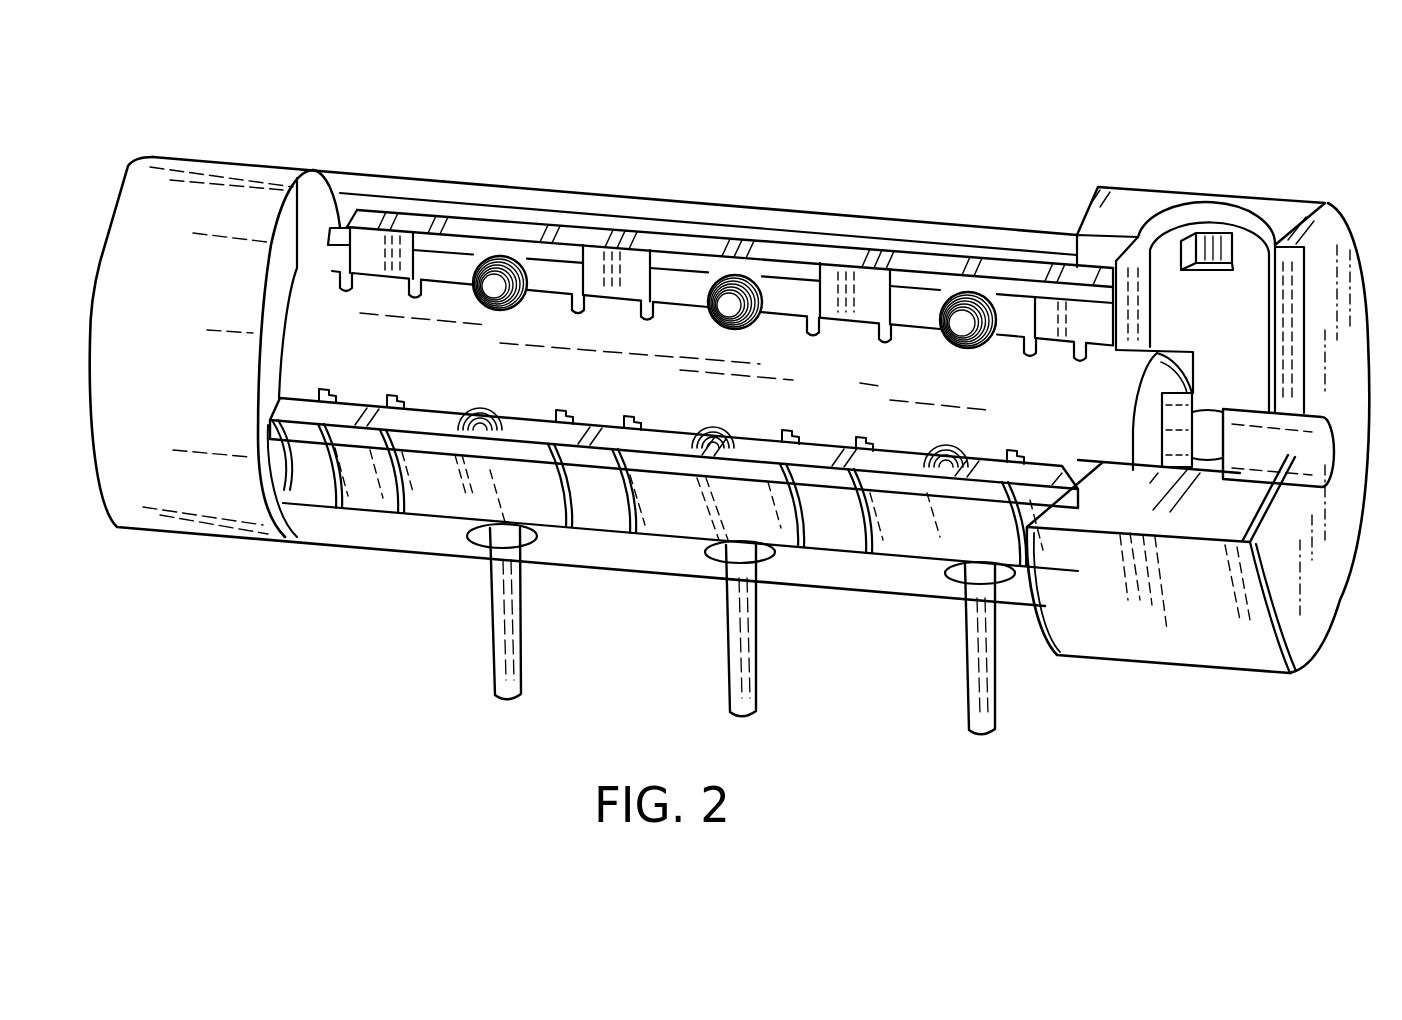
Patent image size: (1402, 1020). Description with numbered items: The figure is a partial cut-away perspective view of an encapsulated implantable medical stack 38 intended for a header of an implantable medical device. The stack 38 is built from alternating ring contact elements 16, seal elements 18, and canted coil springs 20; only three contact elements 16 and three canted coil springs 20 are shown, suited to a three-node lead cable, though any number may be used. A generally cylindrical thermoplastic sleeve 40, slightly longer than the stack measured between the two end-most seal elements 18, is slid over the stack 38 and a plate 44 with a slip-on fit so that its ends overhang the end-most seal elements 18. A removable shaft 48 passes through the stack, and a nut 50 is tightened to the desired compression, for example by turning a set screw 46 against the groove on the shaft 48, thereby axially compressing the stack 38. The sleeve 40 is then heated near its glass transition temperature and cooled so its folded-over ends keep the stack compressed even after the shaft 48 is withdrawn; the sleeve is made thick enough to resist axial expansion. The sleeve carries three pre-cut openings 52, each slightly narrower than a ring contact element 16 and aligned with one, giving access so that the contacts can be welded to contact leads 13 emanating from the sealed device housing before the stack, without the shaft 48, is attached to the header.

The contact leads 13 is at (712, 614).
The ring contact element 16 is at (484, 245).
The seal element 18 is at (850, 292).
The canted coil spring 20 is at (981, 300).
The encapsulated implantable medical stack 38 is at (420, 166).
The thermoplastic sleeve 40 is at (653, 218).
The plate 44 is at (1146, 636).
The set screw 46 is at (1215, 230).
The removable shaft 48 is at (300, 353).
The nut 50 is at (122, 257).
The opening 52 is at (480, 553).